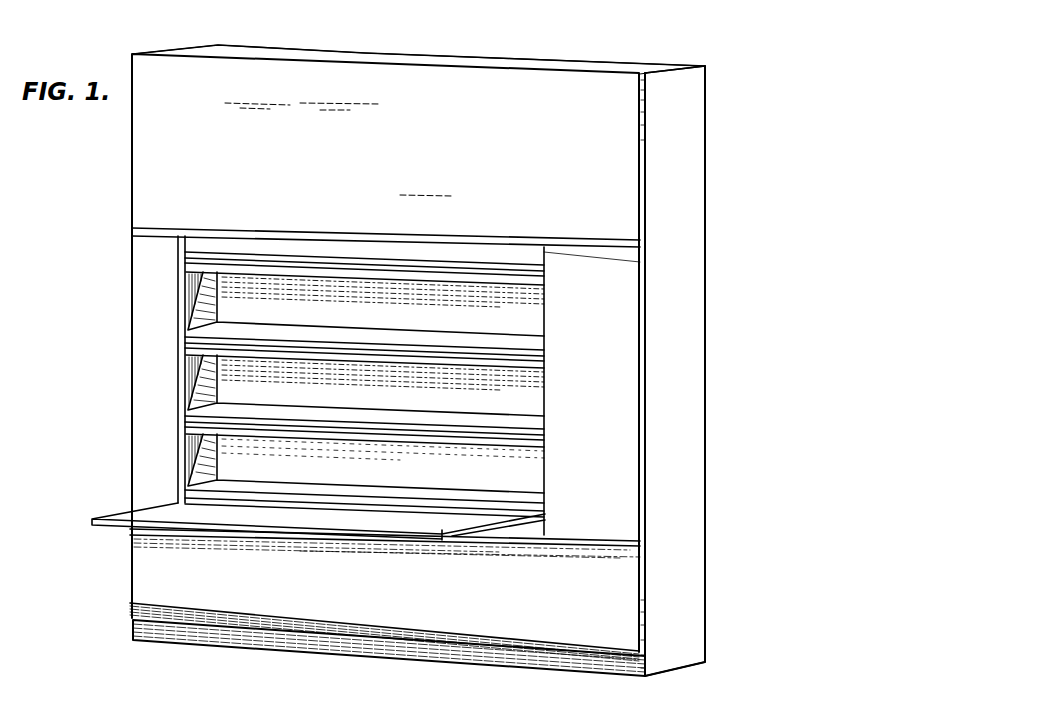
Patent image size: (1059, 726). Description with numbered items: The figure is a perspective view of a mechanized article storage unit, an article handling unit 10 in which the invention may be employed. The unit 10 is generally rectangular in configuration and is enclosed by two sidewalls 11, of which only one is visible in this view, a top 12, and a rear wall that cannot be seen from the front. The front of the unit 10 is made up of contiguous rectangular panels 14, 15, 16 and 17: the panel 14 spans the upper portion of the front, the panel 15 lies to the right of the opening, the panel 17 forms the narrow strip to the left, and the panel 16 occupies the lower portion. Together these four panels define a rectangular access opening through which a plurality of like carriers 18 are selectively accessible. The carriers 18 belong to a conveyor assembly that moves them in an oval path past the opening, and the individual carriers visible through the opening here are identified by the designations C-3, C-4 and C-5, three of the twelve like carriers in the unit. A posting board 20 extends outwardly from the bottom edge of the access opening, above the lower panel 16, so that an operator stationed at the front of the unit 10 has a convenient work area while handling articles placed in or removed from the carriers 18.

The article handling unit 10 is at (124, 299).
The sidewall 11 is at (692, 398).
The top 12 is at (554, 61).
The rectangular panel 14 is at (465, 171).
The rectangular panel 15 is at (603, 403).
The rectangular panel 16 is at (348, 597).
The rectangular panel 17 is at (135, 436).
The carrier 18 is at (522, 453).
The posting board 20 is at (468, 518).
The carrier C-3 is at (365, 304).
The carrier C-4 is at (365, 385).
The carrier C-5 is at (365, 463).